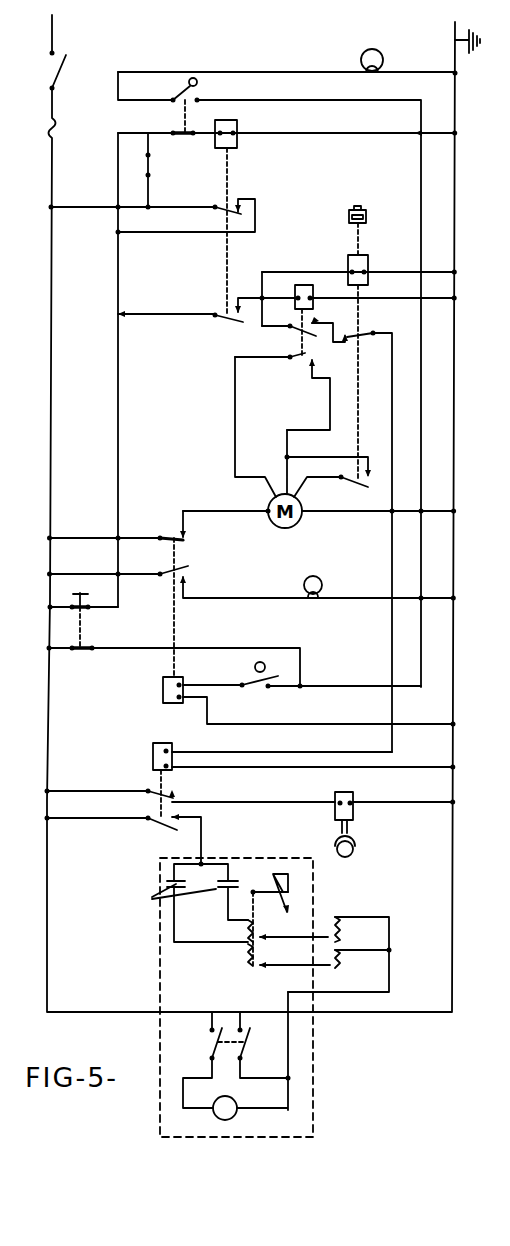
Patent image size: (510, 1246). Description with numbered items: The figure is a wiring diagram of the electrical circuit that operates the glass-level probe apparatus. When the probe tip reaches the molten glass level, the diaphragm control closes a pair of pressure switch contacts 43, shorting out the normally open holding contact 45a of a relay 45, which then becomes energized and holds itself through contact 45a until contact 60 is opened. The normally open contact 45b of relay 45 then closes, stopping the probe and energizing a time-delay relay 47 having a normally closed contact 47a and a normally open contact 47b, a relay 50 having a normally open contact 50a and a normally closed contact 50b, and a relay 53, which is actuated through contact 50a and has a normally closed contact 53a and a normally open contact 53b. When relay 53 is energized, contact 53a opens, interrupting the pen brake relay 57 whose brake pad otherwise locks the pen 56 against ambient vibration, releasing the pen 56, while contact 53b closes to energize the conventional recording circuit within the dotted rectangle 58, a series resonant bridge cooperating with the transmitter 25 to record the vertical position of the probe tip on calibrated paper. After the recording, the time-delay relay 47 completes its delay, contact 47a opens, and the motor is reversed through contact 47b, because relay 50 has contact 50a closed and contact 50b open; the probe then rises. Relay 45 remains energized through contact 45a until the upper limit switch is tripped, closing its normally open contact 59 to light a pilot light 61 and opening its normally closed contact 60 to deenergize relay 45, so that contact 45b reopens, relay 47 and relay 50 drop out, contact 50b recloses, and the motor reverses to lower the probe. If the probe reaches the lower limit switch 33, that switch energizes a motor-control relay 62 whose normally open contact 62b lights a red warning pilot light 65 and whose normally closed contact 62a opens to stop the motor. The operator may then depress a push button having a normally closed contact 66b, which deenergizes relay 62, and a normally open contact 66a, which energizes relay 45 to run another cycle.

The pilot light 61 is at (360, 62).
The normally open contact 59 is at (205, 97).
The relay 45 is at (238, 126).
The normally closed contact 60 is at (190, 140).
The pressure switch contacts 43 is at (153, 178).
The holding contact 45a is at (217, 217).
The normally open contact 45b is at (216, 323).
The time-delay relay 47 is at (369, 263).
The relay 50 is at (312, 292).
The normally open contact 50a is at (300, 335).
The normally closed contact 50b is at (306, 360).
The normally closed contact 47a is at (362, 337).
The normally open contact 47b is at (366, 489).
The normally closed contact 62a is at (190, 546).
The normally open contact 62b is at (190, 576).
The red warning pilot light 65 is at (323, 586).
The normally open contact 66a is at (84, 612).
The normally closed contact 66b is at (86, 653).
The motor-control relay 62 is at (163, 698).
The lower limit switch 33 is at (262, 690).
The relay 53 is at (153, 752).
The normally closed contact 53a is at (144, 792).
The normally open contact 53b is at (147, 822).
The pen brake relay 57 is at (355, 797).
The pen 56 is at (289, 895).
The transmitter 25 is at (337, 941).
The recording circuit 58 is at (207, 1008).